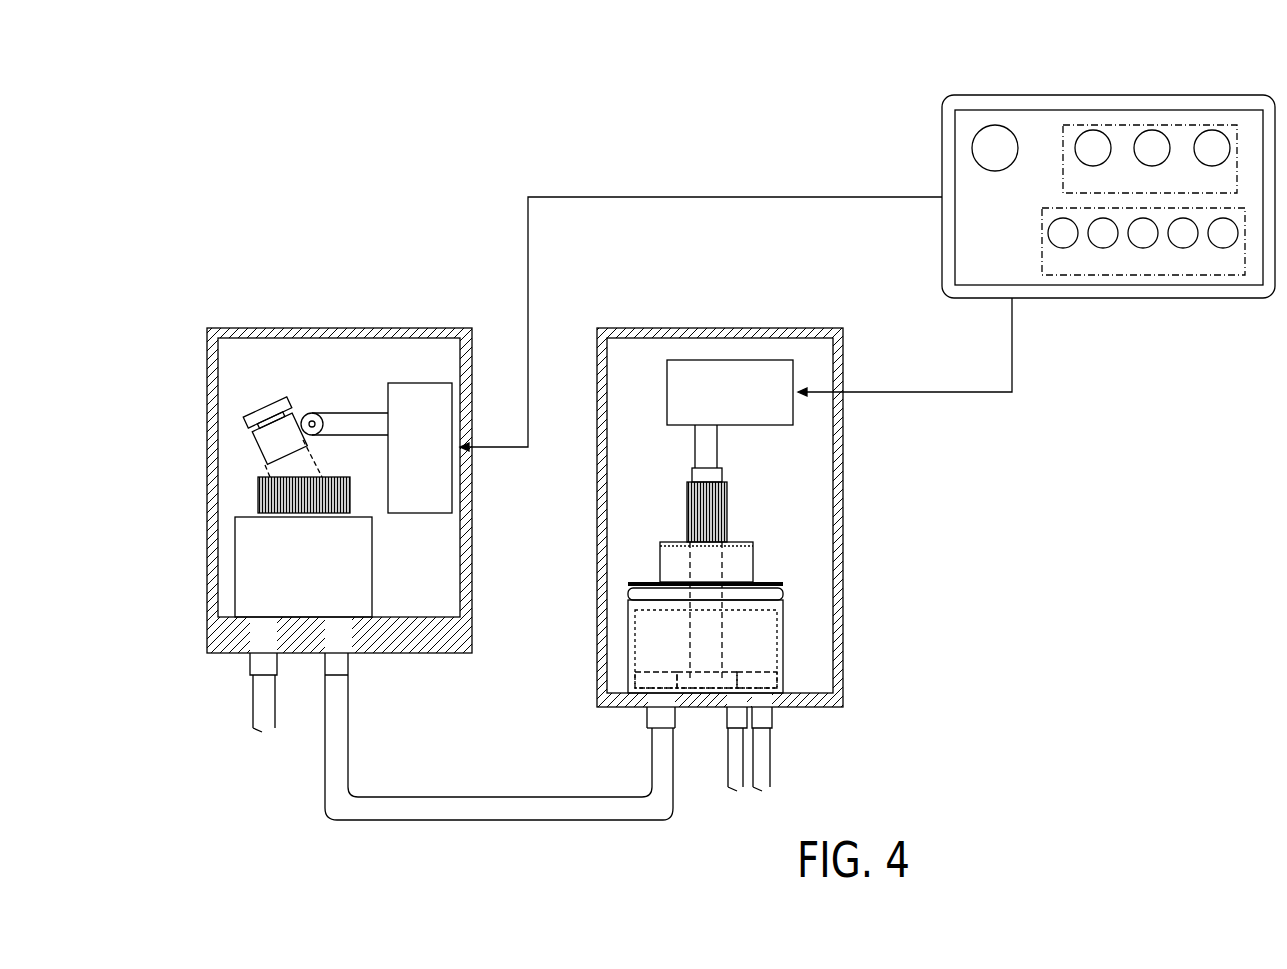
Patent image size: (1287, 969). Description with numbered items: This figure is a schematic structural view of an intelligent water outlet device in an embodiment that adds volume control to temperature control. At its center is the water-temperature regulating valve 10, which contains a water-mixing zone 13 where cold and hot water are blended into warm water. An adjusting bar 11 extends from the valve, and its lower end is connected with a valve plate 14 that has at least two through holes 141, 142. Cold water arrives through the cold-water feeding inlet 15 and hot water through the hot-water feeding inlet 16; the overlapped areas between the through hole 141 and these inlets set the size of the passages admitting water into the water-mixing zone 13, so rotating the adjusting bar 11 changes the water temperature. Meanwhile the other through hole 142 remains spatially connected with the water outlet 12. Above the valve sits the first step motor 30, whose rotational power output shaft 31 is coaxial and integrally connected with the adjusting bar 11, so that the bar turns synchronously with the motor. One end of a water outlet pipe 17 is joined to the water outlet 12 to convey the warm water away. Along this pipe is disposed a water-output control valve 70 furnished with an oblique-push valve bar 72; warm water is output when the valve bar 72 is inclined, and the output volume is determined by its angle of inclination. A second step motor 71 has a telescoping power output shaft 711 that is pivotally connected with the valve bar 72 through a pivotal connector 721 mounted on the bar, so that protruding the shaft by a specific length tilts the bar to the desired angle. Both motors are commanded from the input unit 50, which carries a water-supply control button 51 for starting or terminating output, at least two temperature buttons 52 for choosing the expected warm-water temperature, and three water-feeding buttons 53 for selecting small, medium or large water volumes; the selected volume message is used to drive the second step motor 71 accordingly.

The water-temperature regulating valve 10 is at (733, 562).
The adjusting bar 11 is at (713, 507).
The water outlet 12 is at (652, 718).
The water-mixing zone 13 is at (763, 635).
The valve plate 14 is at (690, 680).
The through hole 141 is at (763, 683).
The through hole 142 is at (633, 677).
The cold-water feeding inlet 15 is at (737, 717).
The hot-water feeding inlet 16 is at (762, 717).
The water outlet pipe 17 is at (337, 718).
The first step motor 30 is at (735, 370).
The power output shaft 31 is at (705, 445).
The input unit 50 is at (1046, 130).
The water-supply control button 51 is at (995, 125).
The temperature buttons 52 is at (1163, 278).
The water-feeding buttons 53 is at (1158, 125).
The water-output control valve 70 is at (265, 492).
The second step motor 71 is at (440, 403).
The power output shaft 711 is at (350, 413).
The valve bar 72 is at (258, 408).
The pivotal connector 721 is at (310, 413).